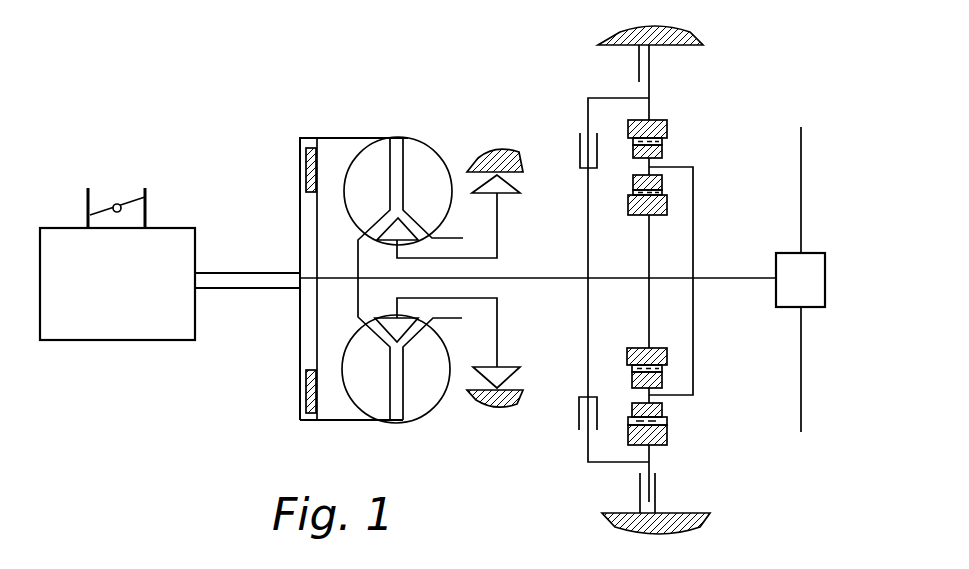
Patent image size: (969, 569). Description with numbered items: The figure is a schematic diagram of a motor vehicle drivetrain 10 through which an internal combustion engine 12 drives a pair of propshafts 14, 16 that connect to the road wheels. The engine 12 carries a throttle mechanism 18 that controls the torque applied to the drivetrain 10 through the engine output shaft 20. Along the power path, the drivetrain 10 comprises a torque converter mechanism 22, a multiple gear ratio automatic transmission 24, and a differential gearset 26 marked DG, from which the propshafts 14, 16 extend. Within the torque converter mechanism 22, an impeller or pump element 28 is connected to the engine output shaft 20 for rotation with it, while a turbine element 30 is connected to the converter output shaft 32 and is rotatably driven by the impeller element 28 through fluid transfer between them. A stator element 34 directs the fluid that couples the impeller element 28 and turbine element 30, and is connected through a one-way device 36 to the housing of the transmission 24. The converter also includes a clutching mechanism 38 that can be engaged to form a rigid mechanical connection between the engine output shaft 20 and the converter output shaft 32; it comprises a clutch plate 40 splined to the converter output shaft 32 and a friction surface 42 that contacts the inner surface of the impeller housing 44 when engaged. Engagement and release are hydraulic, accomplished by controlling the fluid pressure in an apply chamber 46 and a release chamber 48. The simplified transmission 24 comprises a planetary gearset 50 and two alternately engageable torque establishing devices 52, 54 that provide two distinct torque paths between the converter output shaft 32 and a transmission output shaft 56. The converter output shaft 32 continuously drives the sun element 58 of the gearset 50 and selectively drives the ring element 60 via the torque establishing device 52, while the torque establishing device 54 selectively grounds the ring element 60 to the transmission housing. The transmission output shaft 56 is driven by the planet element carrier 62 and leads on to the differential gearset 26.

The motor vehicle drivetrain 10 is at (291, 82).
The internal combustion engine 12 is at (123, 326).
The propshaft 14 is at (803, 147).
The propshaft 16 is at (802, 383).
The throttle mechanism 18 is at (88, 203).
The engine output shaft 20 is at (235, 282).
The torque converter mechanism 22 is at (424, 109).
The multiple gear ratio automatic transmission 24 is at (579, 71).
The differential gearset 26 is at (818, 257).
The impeller element 28 is at (427, 413).
The turbine element 30 is at (360, 408).
The converter output shaft 32 is at (527, 278).
The stator element 34 is at (398, 322).
The one-way device 36 is at (512, 350).
The clutching mechanism 38 is at (297, 149).
The clutch plate 40 is at (317, 210).
The friction surface 42 is at (310, 393).
The impeller housing 44 is at (300, 415).
The apply chamber 46 is at (340, 153).
The release chamber 48 is at (310, 345).
The planetary gearset 50 is at (690, 146).
The torque establishing device 52 is at (580, 135).
The torque establishing device 54 is at (655, 80).
The transmission output shaft 56 is at (750, 282).
The sun element 58 is at (645, 292).
The ring element 60 is at (652, 108).
The planet element carrier 62 is at (695, 220).